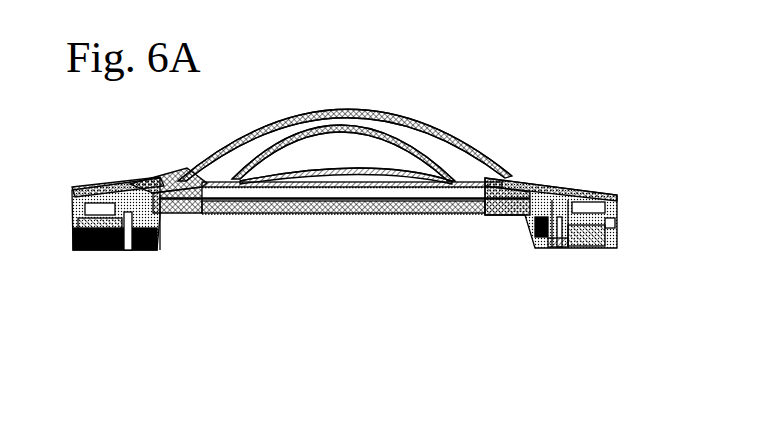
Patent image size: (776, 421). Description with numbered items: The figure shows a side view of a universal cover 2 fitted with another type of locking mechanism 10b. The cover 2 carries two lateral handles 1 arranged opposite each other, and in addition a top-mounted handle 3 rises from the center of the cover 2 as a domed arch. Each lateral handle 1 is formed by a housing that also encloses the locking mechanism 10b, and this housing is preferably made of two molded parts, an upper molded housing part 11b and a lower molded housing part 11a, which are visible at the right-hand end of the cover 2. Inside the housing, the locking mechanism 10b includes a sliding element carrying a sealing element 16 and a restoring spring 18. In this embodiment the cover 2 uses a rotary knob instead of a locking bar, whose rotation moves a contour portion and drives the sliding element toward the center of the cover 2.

The lateral handle 1 is at (612, 206).
The cover 2 is at (310, 348).
The top-mounted handle 3 is at (333, 119).
The locking mechanism 10b is at (193, 238).
The molded housing part 11a is at (605, 240).
The molded housing part 11b is at (582, 191).
The sealing element 16 is at (540, 240).
The restoring spring 18 is at (580, 232).